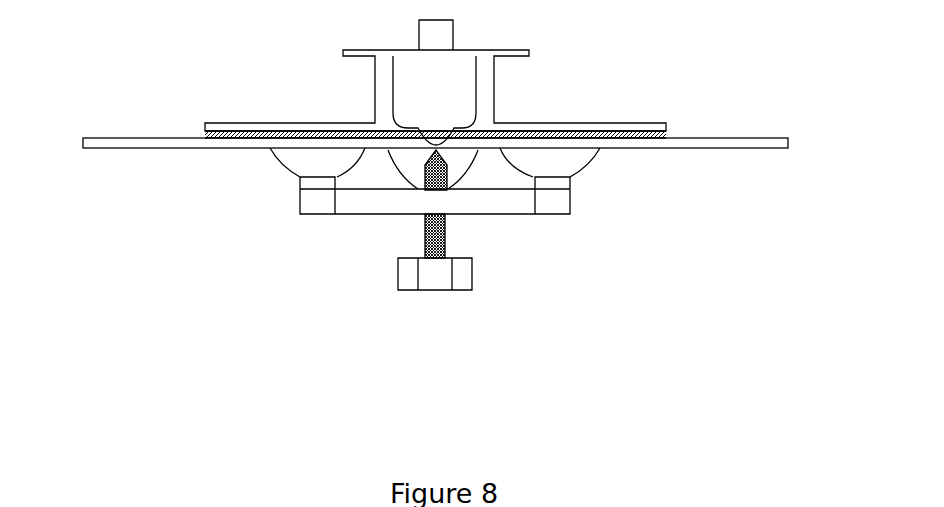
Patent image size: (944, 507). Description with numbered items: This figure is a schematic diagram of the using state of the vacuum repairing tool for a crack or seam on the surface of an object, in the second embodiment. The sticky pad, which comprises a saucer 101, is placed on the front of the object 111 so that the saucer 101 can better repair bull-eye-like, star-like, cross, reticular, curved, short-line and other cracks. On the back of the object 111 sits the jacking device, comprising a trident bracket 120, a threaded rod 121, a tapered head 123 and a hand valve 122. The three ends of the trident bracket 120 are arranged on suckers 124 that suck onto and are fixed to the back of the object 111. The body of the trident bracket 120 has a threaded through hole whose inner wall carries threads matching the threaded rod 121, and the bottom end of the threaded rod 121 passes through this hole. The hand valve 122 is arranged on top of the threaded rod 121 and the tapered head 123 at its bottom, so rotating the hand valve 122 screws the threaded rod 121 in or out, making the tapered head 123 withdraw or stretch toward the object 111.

The saucer 101 is at (565, 123).
The object 111 is at (675, 150).
The trident bracket 120 is at (483, 200).
The threaded rod 121 is at (418, 258).
The hand valve 122 is at (458, 280).
The tapered head 123 is at (434, 148).
The sucker 124 is at (308, 156).